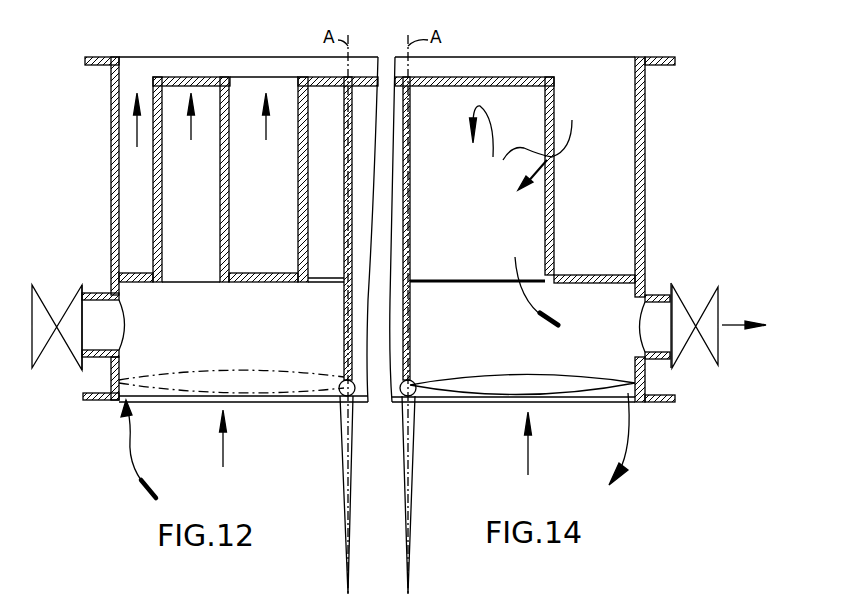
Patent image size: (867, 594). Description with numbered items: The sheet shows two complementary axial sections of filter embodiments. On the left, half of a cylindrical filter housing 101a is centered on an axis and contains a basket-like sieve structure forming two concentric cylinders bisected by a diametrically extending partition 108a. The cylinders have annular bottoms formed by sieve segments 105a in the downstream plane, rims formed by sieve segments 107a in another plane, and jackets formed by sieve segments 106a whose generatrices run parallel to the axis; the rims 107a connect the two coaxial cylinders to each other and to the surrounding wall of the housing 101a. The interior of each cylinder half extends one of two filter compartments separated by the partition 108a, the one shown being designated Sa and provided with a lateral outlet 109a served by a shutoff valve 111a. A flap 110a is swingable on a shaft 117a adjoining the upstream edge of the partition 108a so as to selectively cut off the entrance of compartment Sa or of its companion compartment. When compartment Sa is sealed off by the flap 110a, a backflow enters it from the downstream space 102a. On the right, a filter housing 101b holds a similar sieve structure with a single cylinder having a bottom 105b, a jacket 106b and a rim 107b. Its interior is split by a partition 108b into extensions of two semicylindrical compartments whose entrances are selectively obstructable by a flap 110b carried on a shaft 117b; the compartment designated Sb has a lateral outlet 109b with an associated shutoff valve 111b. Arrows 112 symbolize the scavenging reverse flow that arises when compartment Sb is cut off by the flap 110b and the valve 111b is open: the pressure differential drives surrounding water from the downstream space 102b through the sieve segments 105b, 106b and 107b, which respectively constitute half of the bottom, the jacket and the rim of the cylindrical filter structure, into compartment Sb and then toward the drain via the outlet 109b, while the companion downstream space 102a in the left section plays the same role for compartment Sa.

In FIG. 12, the cylindrical filter housing 101a is at (111, 110).
In FIG. 14, the filter housing 101b is at (646, 117).
In FIG. 12, the downstream space 102a is at (275, 179).
In FIG. 14, the downstream space 102b is at (585, 195).
In FIG. 12, the sieve segments 105a is at (302, 77).
In FIG. 14, the bottom 105b is at (493, 78).
In FIG. 12, the sieve segments 106a is at (213, 193).
In FIG. 14, the jacket 106b is at (545, 203).
In FIG. 12, the sieve segments 107a is at (238, 284).
In FIG. 14, the rim 107b is at (603, 284).
In FIG. 12, the partition 108a is at (343, 223).
In FIG. 14, the partition 108b is at (410, 228).
In FIG. 12, the lateral outlet 109a is at (100, 317).
In FIG. 14, the lateral outlet 109b is at (653, 317).
In FIG. 12, the flap 110a is at (340, 455).
In FIG. 14, the flap 110b is at (493, 392).
In FIG. 12, the shutoff valve 111a is at (73, 332).
In FIG. 14, the shutoff valve 111b is at (675, 299).
In FIG. 14, the arrows 112 is at (737, 325).
In FIG. 12, the shaft 117a is at (340, 394).
In FIG. 14, the shaft 117b is at (413, 394).
In FIG. 12, the filter compartment Sa is at (242, 339).
In FIG. 14, the compartment Sb is at (514, 343).